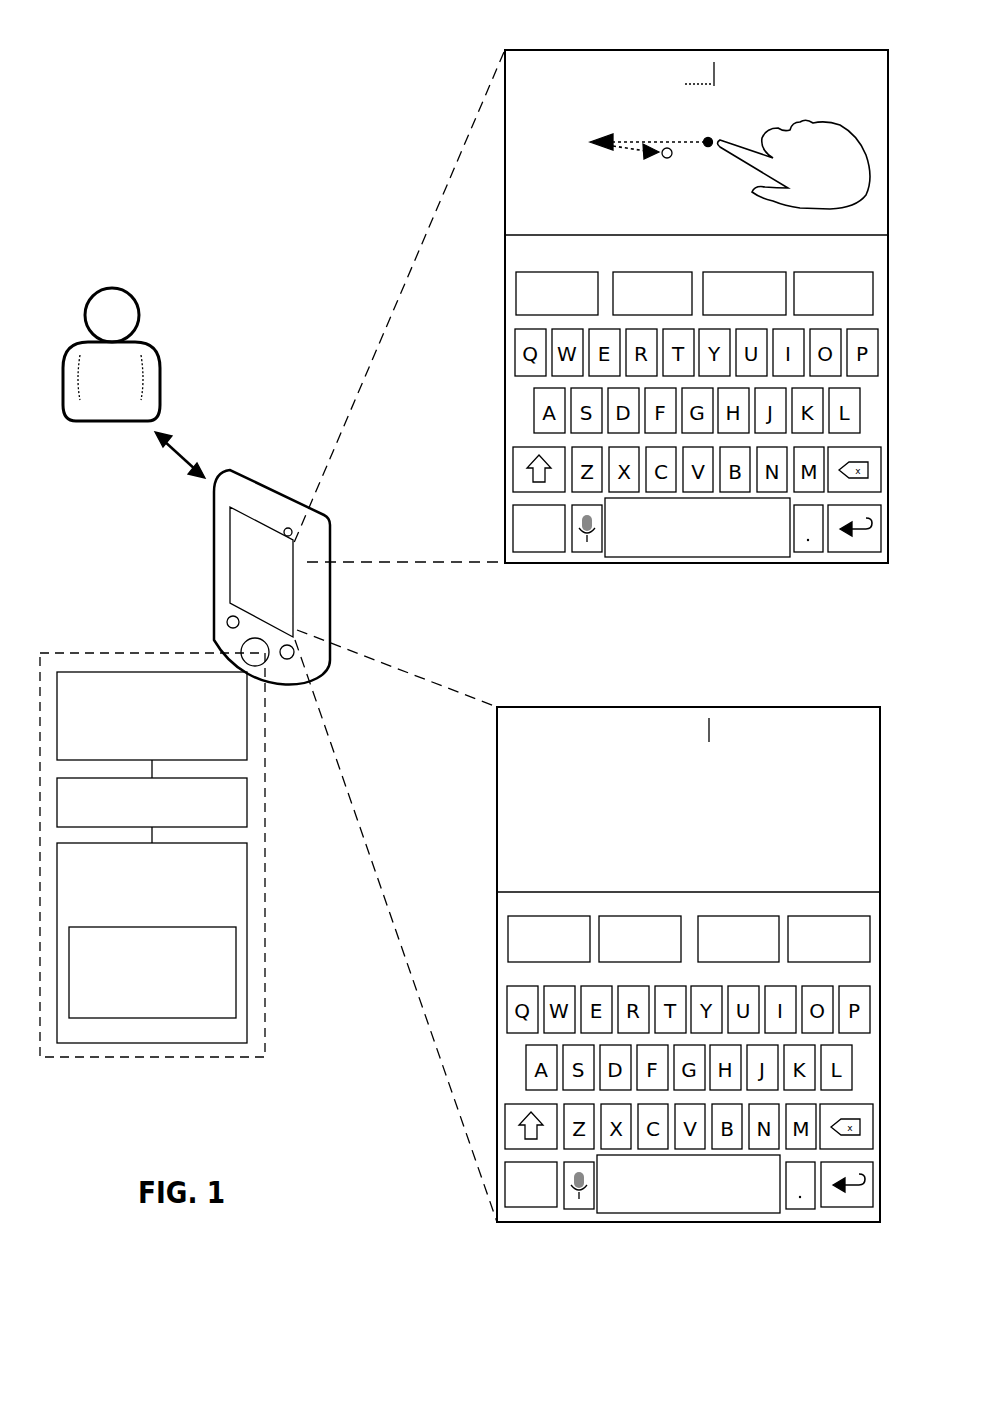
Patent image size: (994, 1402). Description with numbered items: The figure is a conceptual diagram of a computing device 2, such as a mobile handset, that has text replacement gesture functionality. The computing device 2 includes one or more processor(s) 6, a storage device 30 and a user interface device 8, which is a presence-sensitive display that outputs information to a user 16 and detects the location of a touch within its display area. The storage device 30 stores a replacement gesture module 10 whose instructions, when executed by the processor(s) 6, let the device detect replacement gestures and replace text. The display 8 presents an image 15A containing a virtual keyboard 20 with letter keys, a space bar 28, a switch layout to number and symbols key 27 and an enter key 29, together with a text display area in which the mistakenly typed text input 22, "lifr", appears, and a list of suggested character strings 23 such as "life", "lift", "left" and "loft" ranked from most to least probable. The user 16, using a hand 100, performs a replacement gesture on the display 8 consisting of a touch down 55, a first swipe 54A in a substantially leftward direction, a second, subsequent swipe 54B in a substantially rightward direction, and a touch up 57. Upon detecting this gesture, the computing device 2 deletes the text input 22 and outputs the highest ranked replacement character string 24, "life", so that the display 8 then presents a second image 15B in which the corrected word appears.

The computing device 2 is at (248, 468).
The user interface device 8 is at (243, 566).
The processor(s) 6 is at (152, 802).
The storage device 30 is at (152, 943).
The replacement gesture module 10 is at (152, 972).
The user 16 is at (142, 340).
The image 15A is at (855, 50).
The image 15B is at (847, 707).
The virtual keyboard 20 is at (886, 397).
The text input 22 is at (708, 42).
The list of suggested character strings 23 is at (888, 284).
The replacement character string 24 is at (698, 700).
The switch layout to number and symbols key 27 is at (537, 552).
The space bar 28 is at (717, 552).
The enter key 29 is at (853, 552).
The first swipe 54A is at (637, 143).
The second swipe 54B is at (631, 148).
The touch down 55 is at (712, 136).
The touch up 57 is at (671, 158).
The hand 100 is at (794, 164).